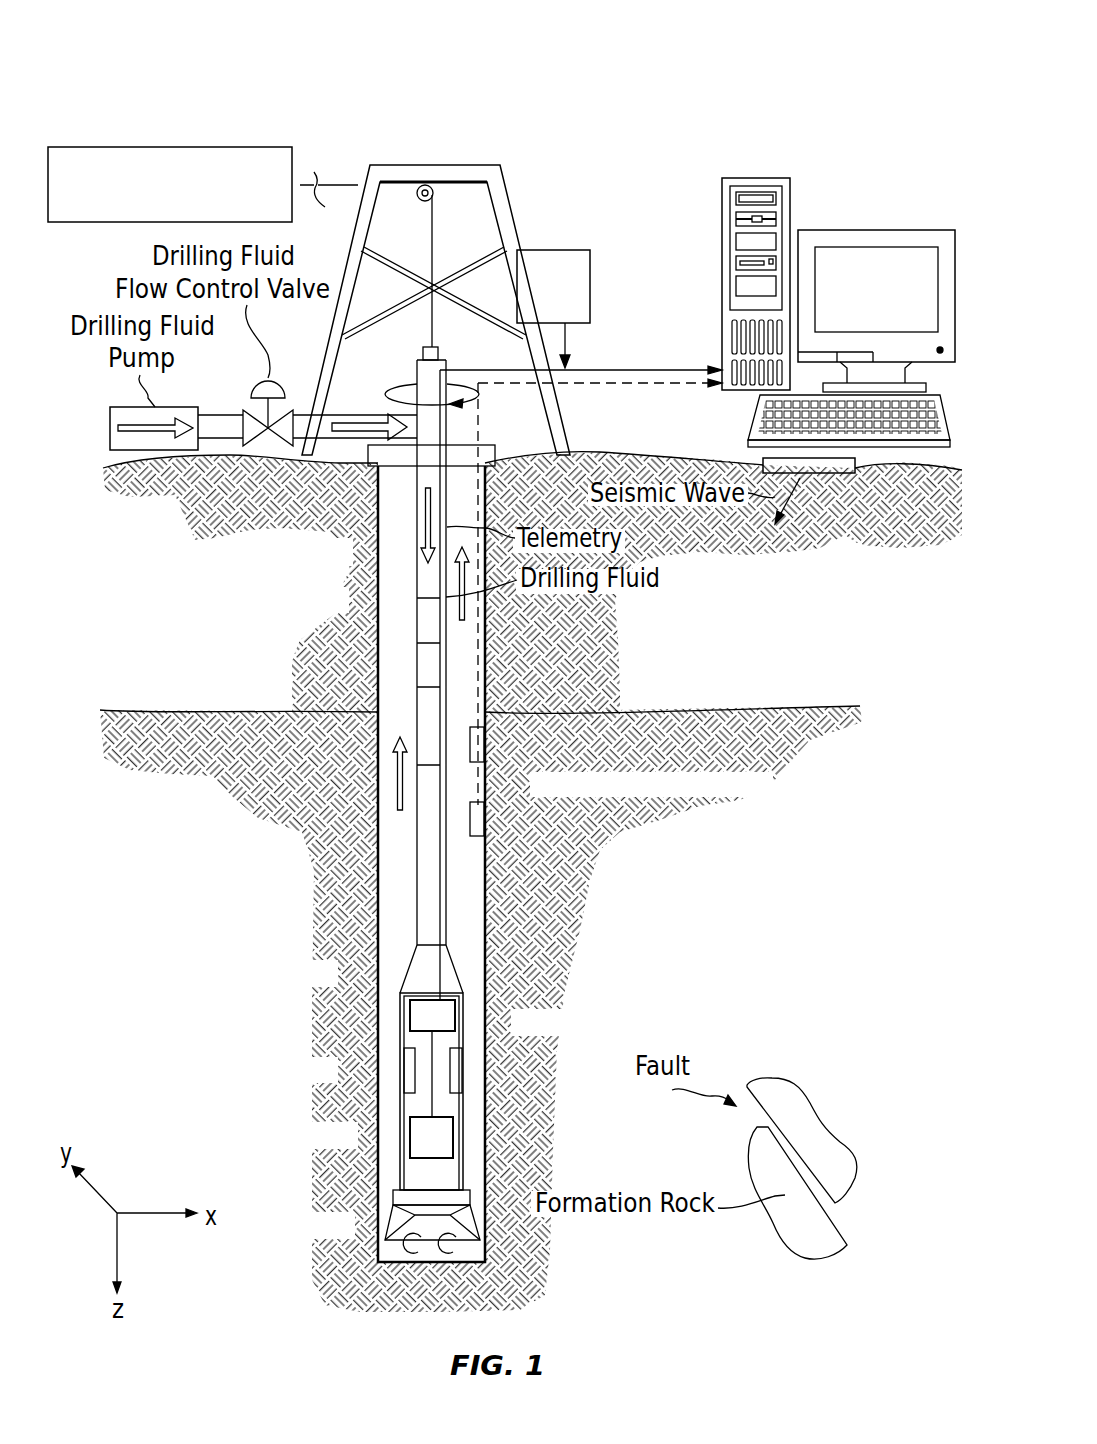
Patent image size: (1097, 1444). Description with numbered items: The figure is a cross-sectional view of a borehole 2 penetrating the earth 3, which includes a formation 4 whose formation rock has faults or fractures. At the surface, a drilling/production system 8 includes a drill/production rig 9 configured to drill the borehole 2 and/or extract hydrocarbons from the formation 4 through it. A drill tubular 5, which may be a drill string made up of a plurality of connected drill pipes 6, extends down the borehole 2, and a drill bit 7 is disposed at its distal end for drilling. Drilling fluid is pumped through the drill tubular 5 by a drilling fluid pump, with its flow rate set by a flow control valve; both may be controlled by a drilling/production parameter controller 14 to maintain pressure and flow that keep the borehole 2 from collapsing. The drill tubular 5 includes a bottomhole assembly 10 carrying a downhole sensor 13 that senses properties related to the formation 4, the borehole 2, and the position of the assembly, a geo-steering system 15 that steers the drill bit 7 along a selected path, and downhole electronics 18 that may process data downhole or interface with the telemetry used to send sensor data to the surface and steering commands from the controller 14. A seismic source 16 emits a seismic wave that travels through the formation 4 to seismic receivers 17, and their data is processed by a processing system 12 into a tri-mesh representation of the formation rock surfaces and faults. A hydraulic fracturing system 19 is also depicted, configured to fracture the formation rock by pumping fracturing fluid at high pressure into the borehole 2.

The borehole 2 is at (380, 620).
The earth 3 is at (171, 523).
The formation 4 is at (271, 761).
The drill tubular 5 is at (417, 720).
The drill pipe 6 is at (417, 567).
The drill bit 7 is at (395, 1222).
The drilling/production system 8 is at (825, 72).
The drill/production rig 9 is at (360, 163).
The bottomhole assembly (BHA) 10 is at (415, 963).
The processing system 12 is at (757, 178).
The downhole sensor 13 is at (418, 1136).
The drilling/production parameter controller 14 is at (553, 250).
The geo-steering system 15 is at (405, 1068).
The seismic source 16 is at (818, 475).
The seismic receiver 17 is at (480, 827).
The downhole electronics 18 is at (432, 1014).
The hydraulic fracturing system 19 is at (236, 213).